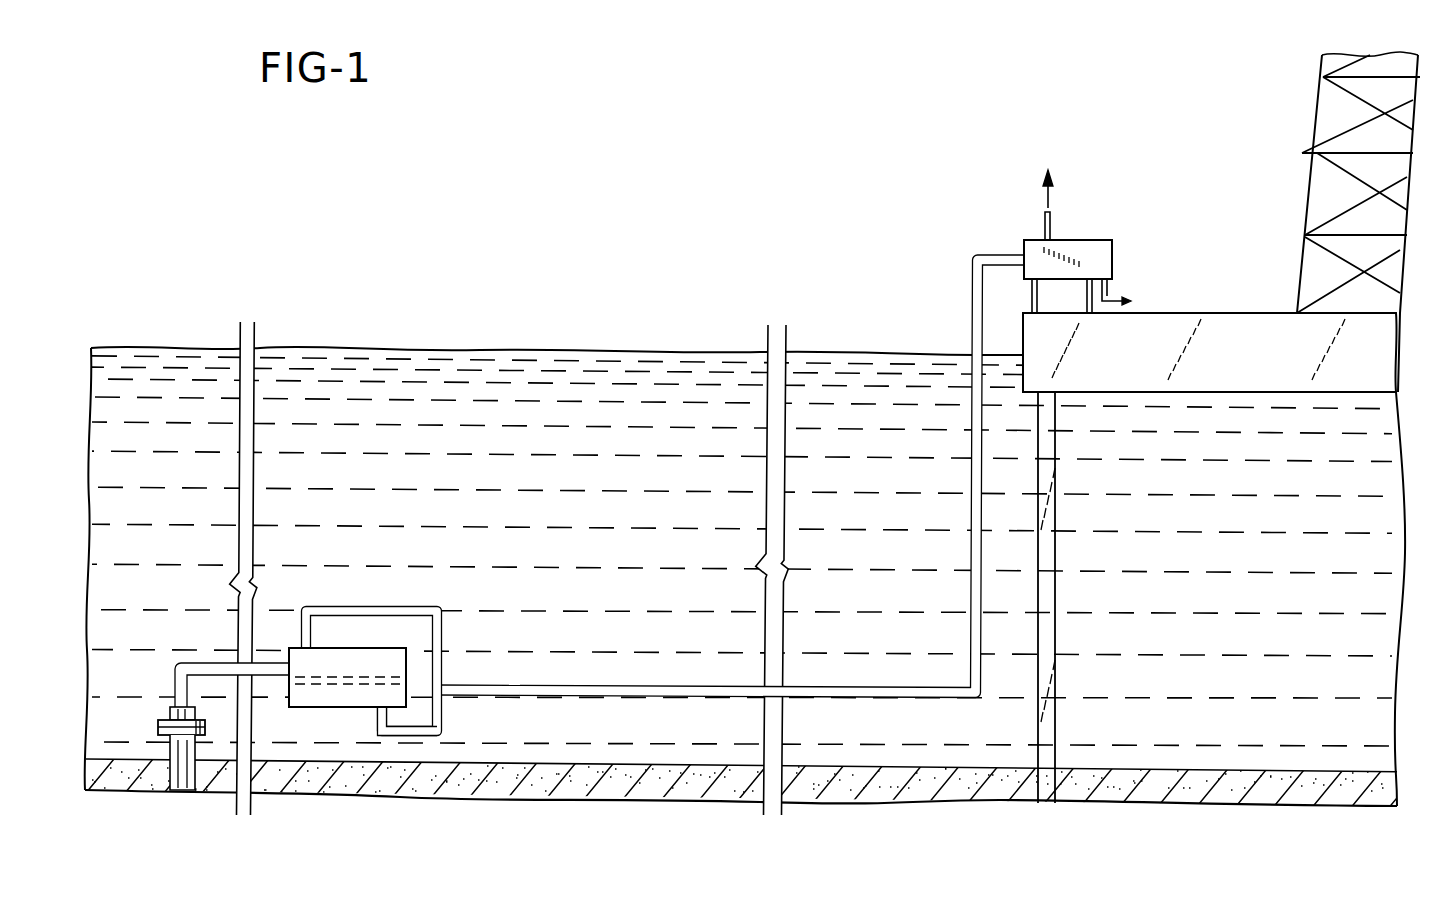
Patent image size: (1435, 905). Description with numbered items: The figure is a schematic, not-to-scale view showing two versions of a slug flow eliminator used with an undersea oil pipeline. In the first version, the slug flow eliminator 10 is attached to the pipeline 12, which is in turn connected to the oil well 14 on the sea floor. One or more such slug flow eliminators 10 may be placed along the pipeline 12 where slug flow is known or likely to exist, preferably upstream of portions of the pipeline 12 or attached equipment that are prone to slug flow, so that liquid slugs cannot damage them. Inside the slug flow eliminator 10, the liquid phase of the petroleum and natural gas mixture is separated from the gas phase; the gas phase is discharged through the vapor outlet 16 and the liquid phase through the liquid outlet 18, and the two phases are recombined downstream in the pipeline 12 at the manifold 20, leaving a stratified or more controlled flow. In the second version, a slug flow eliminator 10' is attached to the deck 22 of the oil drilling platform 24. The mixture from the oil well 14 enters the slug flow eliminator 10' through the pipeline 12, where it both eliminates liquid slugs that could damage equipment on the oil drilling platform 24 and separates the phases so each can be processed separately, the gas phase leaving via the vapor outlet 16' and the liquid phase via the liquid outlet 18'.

The slug flow eliminator 10 is at (331, 695).
The pipeline 12 is at (218, 662).
The oil well 14 is at (157, 728).
The vapor outlet 16 is at (349, 653).
The liquid outlet 18 is at (375, 776).
The manifold 20 is at (447, 686).
The deck 22 is at (1228, 313).
The oil drilling platform 24 is at (1218, 165).
The slug flow eliminator 10' is at (1105, 257).
The vapor outlet 16' is at (1084, 203).
The liquid outlet 18' is at (1147, 285).